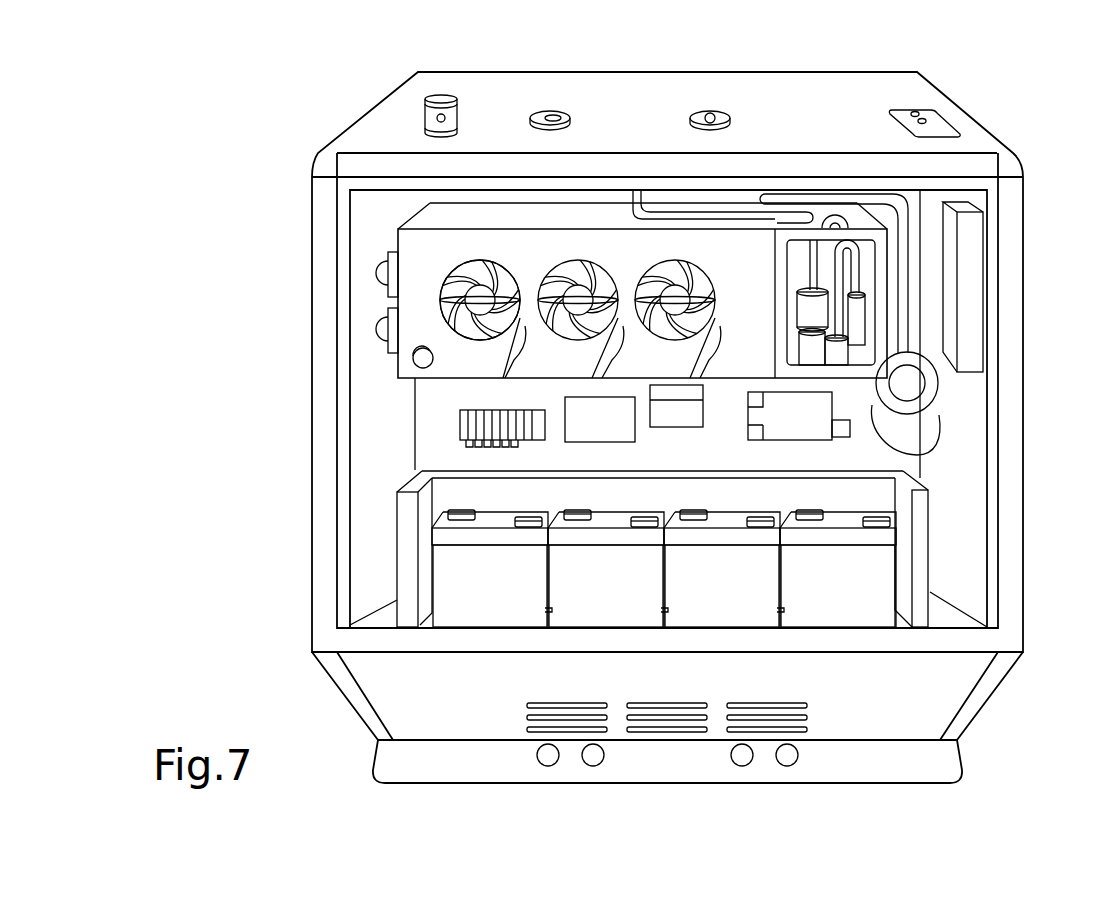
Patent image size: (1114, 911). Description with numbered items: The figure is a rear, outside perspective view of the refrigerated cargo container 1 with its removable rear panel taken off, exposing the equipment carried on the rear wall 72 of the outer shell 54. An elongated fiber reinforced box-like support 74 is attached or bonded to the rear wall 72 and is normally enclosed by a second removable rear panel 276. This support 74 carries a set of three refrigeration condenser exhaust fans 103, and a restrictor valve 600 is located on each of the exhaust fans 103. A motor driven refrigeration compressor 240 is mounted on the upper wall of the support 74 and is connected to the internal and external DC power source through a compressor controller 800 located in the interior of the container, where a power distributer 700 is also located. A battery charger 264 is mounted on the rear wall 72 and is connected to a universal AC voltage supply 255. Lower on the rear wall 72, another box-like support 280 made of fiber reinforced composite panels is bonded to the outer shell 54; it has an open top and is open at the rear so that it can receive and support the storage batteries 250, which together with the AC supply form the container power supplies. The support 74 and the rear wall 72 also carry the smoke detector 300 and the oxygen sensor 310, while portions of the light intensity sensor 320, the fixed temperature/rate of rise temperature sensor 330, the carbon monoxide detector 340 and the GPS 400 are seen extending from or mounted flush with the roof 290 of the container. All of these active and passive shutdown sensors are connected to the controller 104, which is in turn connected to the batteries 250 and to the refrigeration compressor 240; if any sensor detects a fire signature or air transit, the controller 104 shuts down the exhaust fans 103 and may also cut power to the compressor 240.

The cargo container 1 is at (1045, 68).
The outer shell 54 is at (367, 458).
The rear wall 72 is at (435, 195).
The box-like support 74 is at (422, 250).
The refrigeration condenser exhaust fans 103 is at (470, 345).
The controller 104 is at (968, 240).
The refrigeration compressor 240 is at (808, 313).
The storage batteries 250 is at (472, 594).
The universal AC voltage supply 255 is at (605, 435).
The battery charger 264 is at (688, 417).
The second removable rear panel 276 is at (582, 217).
The box-like support 280 is at (922, 485).
The roof 290 is at (617, 87).
The smoke detector 300 is at (357, 320).
The oxygen sensor 310 is at (413, 363).
The light intensity sensor 320 is at (439, 92).
The temperature sensor 330 is at (723, 113).
The carbon monoxide detector 340 is at (538, 115).
The GPS 400 is at (937, 130).
The restrictor valve 600 is at (458, 305).
The power distributer 700 is at (802, 432).
The compressor controller 800 is at (462, 425).